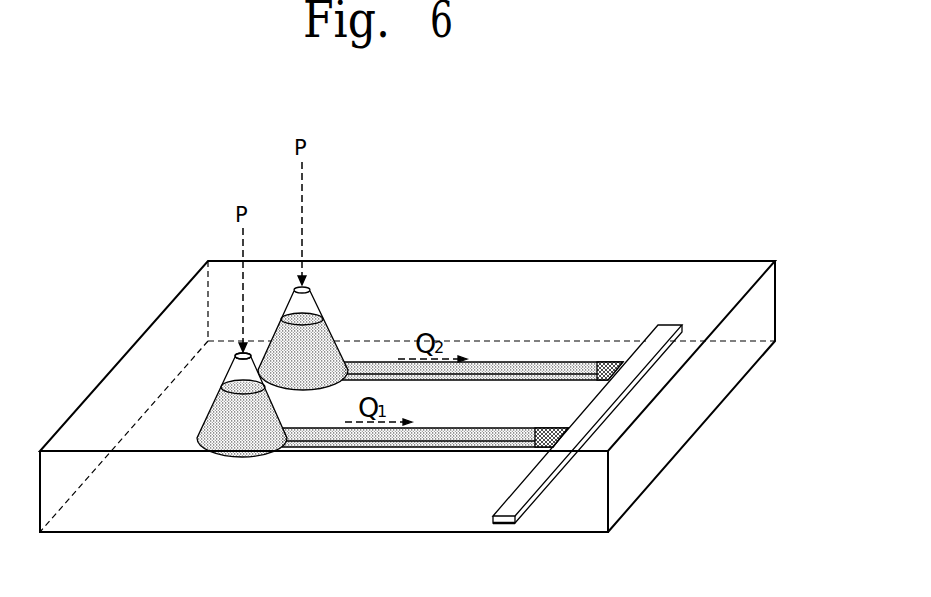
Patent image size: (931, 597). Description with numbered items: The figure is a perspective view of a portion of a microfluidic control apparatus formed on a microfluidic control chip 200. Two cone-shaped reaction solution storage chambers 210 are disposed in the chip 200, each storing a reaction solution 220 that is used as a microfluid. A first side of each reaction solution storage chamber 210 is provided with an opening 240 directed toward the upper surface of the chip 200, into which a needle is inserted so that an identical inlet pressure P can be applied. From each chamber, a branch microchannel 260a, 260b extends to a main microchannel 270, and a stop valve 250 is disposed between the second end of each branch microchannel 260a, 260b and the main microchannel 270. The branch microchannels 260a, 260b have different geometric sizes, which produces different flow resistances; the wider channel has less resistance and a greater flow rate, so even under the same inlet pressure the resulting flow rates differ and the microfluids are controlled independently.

The microfluidic control chip 200 is at (678, 260).
The reaction solution storage chamber 210 is at (200, 423).
The reaction solution 220 is at (222, 437).
The opening 240 is at (237, 346).
The stop valve 250 is at (607, 366).
The branch microchannel 260a is at (437, 432).
The branch microchannel 260b is at (502, 366).
The main microchannel 270 is at (648, 345).